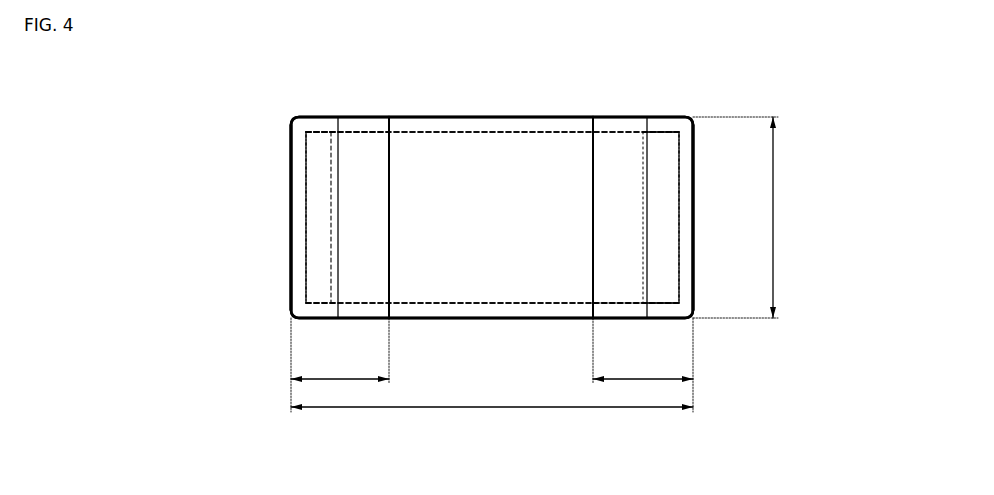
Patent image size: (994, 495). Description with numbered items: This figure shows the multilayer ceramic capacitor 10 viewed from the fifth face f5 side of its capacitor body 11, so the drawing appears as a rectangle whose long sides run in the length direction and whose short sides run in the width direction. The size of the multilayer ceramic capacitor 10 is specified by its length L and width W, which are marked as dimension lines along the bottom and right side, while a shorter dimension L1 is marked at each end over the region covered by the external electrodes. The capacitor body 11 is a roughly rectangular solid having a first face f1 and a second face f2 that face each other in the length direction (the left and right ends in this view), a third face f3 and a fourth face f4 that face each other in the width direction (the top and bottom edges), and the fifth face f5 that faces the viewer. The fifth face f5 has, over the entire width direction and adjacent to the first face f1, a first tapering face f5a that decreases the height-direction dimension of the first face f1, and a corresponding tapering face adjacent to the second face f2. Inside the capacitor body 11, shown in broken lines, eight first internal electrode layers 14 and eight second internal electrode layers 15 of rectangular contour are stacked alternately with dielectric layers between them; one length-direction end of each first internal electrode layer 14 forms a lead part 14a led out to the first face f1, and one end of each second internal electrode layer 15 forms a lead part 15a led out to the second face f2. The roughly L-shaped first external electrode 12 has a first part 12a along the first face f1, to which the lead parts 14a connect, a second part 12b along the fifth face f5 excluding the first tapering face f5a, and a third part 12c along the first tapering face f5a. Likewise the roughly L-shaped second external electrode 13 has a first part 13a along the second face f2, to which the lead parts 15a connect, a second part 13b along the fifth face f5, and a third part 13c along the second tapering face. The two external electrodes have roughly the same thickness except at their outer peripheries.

The multilayer ceramic capacitor 10 is at (404, 110).
The capacitor body 11 is at (445, 117).
The first external electrode 12 is at (291, 183).
The first part 12a is at (296, 255).
The second part 12b is at (362, 281).
The third part 12c is at (308, 292).
The second external electrode 13 is at (693, 183).
The first part 13a is at (693, 257).
The second part 13b is at (622, 281).
The third part 13c is at (672, 290).
The first internal electrode layer 14 is at (306, 140).
The lead part 14a is at (302, 151).
The second internal electrode layer 15 is at (675, 145).
The lead part 15a is at (680, 226).
The first face f1 is at (298, 226).
The second face f2 is at (688, 226).
The third face f3 is at (512, 117).
The fourth face f4 is at (511, 318).
The fifth face f5 is at (544, 148).
The first tapering face f5a is at (318, 122).
The length L is at (492, 417).
The external electrode length dimension L1 is at (492, 365).
The width W is at (742, 217).